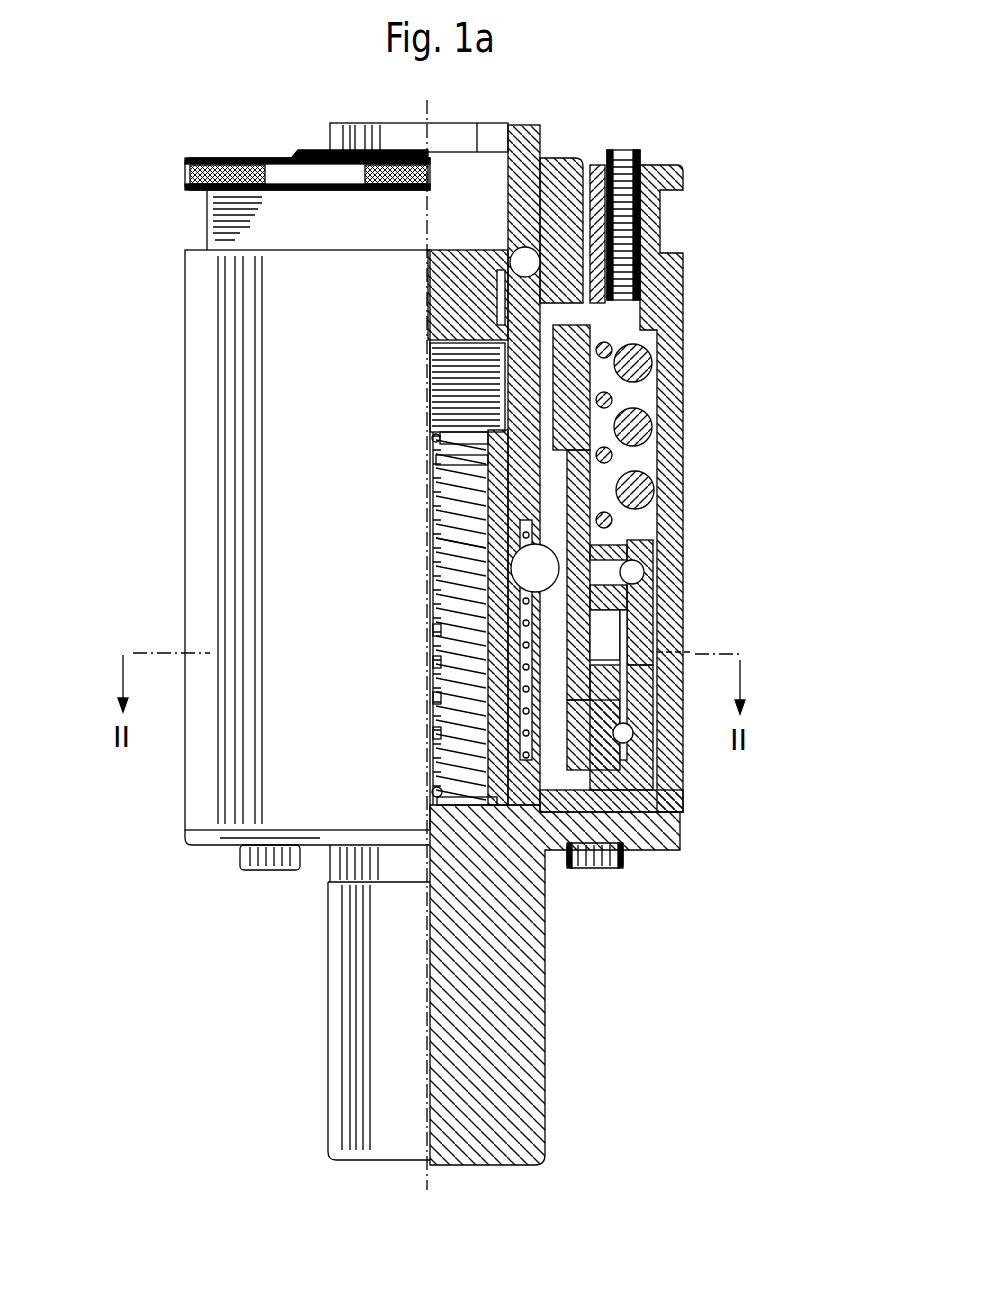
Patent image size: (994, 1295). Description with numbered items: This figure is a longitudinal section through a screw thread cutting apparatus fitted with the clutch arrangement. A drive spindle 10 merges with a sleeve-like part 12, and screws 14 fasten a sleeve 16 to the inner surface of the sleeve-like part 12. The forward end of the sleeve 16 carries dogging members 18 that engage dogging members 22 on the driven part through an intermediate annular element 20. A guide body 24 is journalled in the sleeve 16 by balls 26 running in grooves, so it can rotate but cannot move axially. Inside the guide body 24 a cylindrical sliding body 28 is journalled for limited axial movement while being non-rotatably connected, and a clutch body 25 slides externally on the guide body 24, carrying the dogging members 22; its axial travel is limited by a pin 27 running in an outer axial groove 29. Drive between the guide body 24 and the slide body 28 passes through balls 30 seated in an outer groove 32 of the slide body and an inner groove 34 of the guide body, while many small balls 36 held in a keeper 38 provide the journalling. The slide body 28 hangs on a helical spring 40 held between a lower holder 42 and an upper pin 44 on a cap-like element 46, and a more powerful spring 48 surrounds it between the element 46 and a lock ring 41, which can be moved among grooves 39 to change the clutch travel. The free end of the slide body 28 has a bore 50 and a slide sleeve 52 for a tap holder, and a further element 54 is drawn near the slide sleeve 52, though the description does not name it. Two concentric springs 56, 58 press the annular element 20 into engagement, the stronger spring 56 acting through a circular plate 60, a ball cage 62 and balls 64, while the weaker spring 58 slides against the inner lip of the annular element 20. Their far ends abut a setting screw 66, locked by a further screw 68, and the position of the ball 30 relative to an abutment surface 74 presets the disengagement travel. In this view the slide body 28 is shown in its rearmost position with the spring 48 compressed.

The drive spindle 10 is at (525, 992).
The sleeve-like part 12 is at (687, 761).
The screws 14 is at (618, 873).
The sleeve 16 is at (668, 712).
The dogging members 18 is at (665, 678).
The annular element 20 is at (663, 630).
The dogging members 22 is at (691, 652).
The guide body 24 is at (668, 802).
The clutch body 25 is at (656, 390).
The balls 26 is at (668, 745).
The pin 27 is at (655, 456).
The sliding body 28 is at (655, 489).
The groove 29 is at (448, 393).
The balls 30 is at (645, 553).
The groove 32 is at (437, 628).
The groove 34 is at (433, 665).
The small balls 36 is at (433, 698).
The keeper 38 is at (433, 732).
The grooves 39 is at (433, 502).
The helical spring 40 is at (432, 575).
The lock ring 41 is at (428, 462).
The lower holder 42 is at (430, 432).
The upper pin 44 is at (437, 787).
The cap-like element 46 is at (433, 797).
The spring 48 is at (433, 540).
The bore 50 is at (490, 138).
The slide sleeve 52 is at (558, 153).
The ball 54 is at (512, 247).
The spring 56 is at (680, 345).
The spring 58 is at (650, 422).
The circular plate 60 is at (683, 554).
The ball cage 62 is at (670, 590).
The balls 64 is at (687, 593).
The setting screw 66 is at (677, 173).
The screw 68 is at (620, 150).
The abutment surface 74 is at (648, 521).